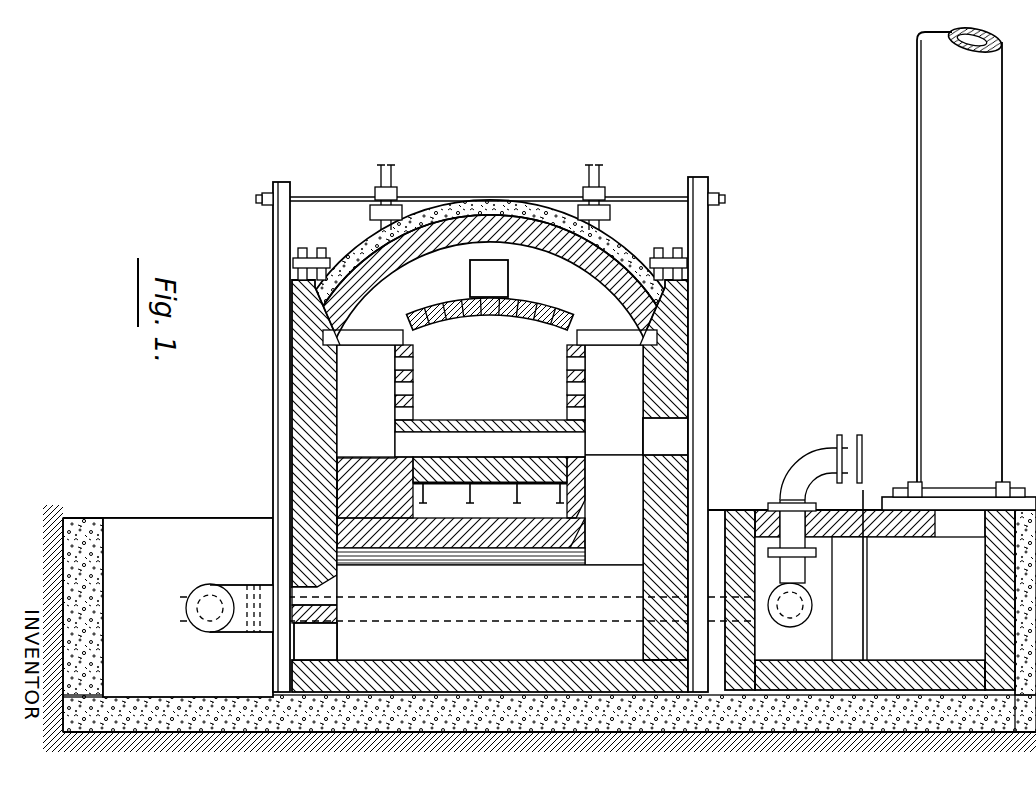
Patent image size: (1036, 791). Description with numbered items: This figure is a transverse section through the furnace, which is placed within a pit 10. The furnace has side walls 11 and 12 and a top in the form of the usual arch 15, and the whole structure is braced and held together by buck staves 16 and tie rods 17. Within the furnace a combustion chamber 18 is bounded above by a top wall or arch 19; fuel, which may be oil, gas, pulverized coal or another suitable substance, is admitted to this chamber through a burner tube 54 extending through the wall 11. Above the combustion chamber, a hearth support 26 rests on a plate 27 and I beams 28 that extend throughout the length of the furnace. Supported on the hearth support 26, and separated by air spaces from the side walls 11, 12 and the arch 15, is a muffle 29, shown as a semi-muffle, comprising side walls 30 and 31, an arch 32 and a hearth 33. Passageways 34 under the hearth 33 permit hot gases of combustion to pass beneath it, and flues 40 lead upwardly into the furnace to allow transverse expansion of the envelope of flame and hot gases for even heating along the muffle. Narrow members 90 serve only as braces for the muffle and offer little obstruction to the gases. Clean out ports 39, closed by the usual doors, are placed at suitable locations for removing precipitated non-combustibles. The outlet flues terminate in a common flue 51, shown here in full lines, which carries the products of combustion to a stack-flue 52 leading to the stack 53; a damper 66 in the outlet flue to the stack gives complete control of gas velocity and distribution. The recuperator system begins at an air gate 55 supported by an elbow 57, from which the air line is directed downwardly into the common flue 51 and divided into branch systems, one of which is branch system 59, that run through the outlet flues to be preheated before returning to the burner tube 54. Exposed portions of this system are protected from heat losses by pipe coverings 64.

The pit 10 is at (188, 607).
The side wall 11 is at (292, 350).
The side wall 12 is at (688, 348).
The arch 15 is at (520, 242).
The buck staves 16 is at (273, 243).
The tie rods 17 is at (618, 197).
The combustion chamber 18 is at (490, 612).
The top wall or arch 19 is at (493, 552).
The hearth support 26 is at (512, 462).
The plate 27 is at (436, 494).
The I beams 28 is at (474, 490).
The muffle 29 is at (490, 382).
The side wall 30 is at (413, 373).
The side wall 31 is at (567, 376).
The arch 32 is at (476, 318).
The hearth 33 is at (497, 420).
The passageways 34 is at (490, 444).
The clean out ports 39 is at (491, 460).
The flues 40 is at (614, 510).
The common flue 51 is at (790, 619).
The stack-flue 52 is at (870, 600).
The stack 53 is at (959, 267).
The burner tube 54 is at (330, 598).
The air gate 55 is at (855, 435).
The elbow 57 is at (798, 465).
The branch system 59 is at (438, 617).
The pipe coverings 64 is at (218, 587).
The damper 66 is at (865, 615).
The members 90 is at (382, 345).